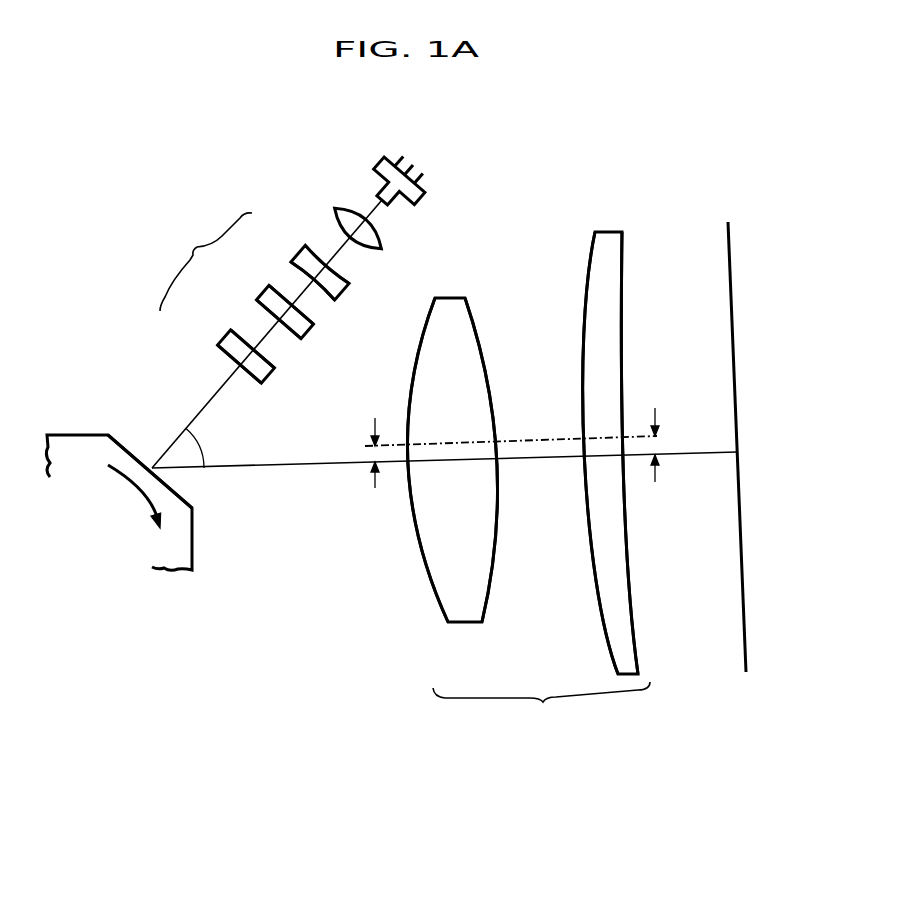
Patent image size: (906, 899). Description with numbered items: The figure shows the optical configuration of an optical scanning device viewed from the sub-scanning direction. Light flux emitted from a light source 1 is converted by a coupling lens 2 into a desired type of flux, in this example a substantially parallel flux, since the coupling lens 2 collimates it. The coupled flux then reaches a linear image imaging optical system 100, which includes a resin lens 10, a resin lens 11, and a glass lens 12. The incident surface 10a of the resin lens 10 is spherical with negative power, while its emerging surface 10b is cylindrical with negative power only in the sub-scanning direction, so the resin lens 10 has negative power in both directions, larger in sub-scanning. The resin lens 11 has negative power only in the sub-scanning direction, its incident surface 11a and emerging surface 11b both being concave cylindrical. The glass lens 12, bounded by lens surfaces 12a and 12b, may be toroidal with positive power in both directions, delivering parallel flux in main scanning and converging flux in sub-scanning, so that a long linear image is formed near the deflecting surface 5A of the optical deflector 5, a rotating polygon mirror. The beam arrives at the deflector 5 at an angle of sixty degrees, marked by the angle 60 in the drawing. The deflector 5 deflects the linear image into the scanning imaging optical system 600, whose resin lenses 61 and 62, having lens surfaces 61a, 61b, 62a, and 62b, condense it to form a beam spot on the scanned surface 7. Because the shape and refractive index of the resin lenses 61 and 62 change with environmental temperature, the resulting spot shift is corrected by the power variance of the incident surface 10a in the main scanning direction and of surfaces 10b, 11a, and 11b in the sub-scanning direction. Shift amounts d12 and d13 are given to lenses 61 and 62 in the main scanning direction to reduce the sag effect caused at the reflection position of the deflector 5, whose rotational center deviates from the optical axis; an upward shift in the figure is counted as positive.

The light source 1 is at (383, 162).
The coupling lens 2 is at (348, 210).
The linear image imaging optical system 100 is at (206, 262).
The resin lens 10 is at (298, 256).
The incident surface 10a is at (338, 272).
The emerging surface 10b is at (325, 303).
The resin lens 11 is at (264, 296).
The incident surface 11a is at (310, 318).
The emerging surface 11b is at (292, 342).
The glass lens 12 is at (226, 342).
The lens surface 12a is at (264, 360).
The lens surface 12b is at (250, 383).
The optical deflector 5 is at (73, 446).
The deflecting surface 5A is at (125, 447).
The incident angle of 60 degrees 60 is at (205, 447).
The lens 61 is at (460, 313).
The lens surface 61a is at (425, 566).
The lens surface 61b is at (494, 560).
The lens 62 is at (613, 253).
The lens surface 62a is at (602, 630).
The lens surface 62b is at (636, 631).
The scanning imaging optical system 600 is at (541, 705).
The scanned surface 7 is at (728, 232).
The shift amount d12 is at (372, 458).
The shift amount d13 is at (656, 446).